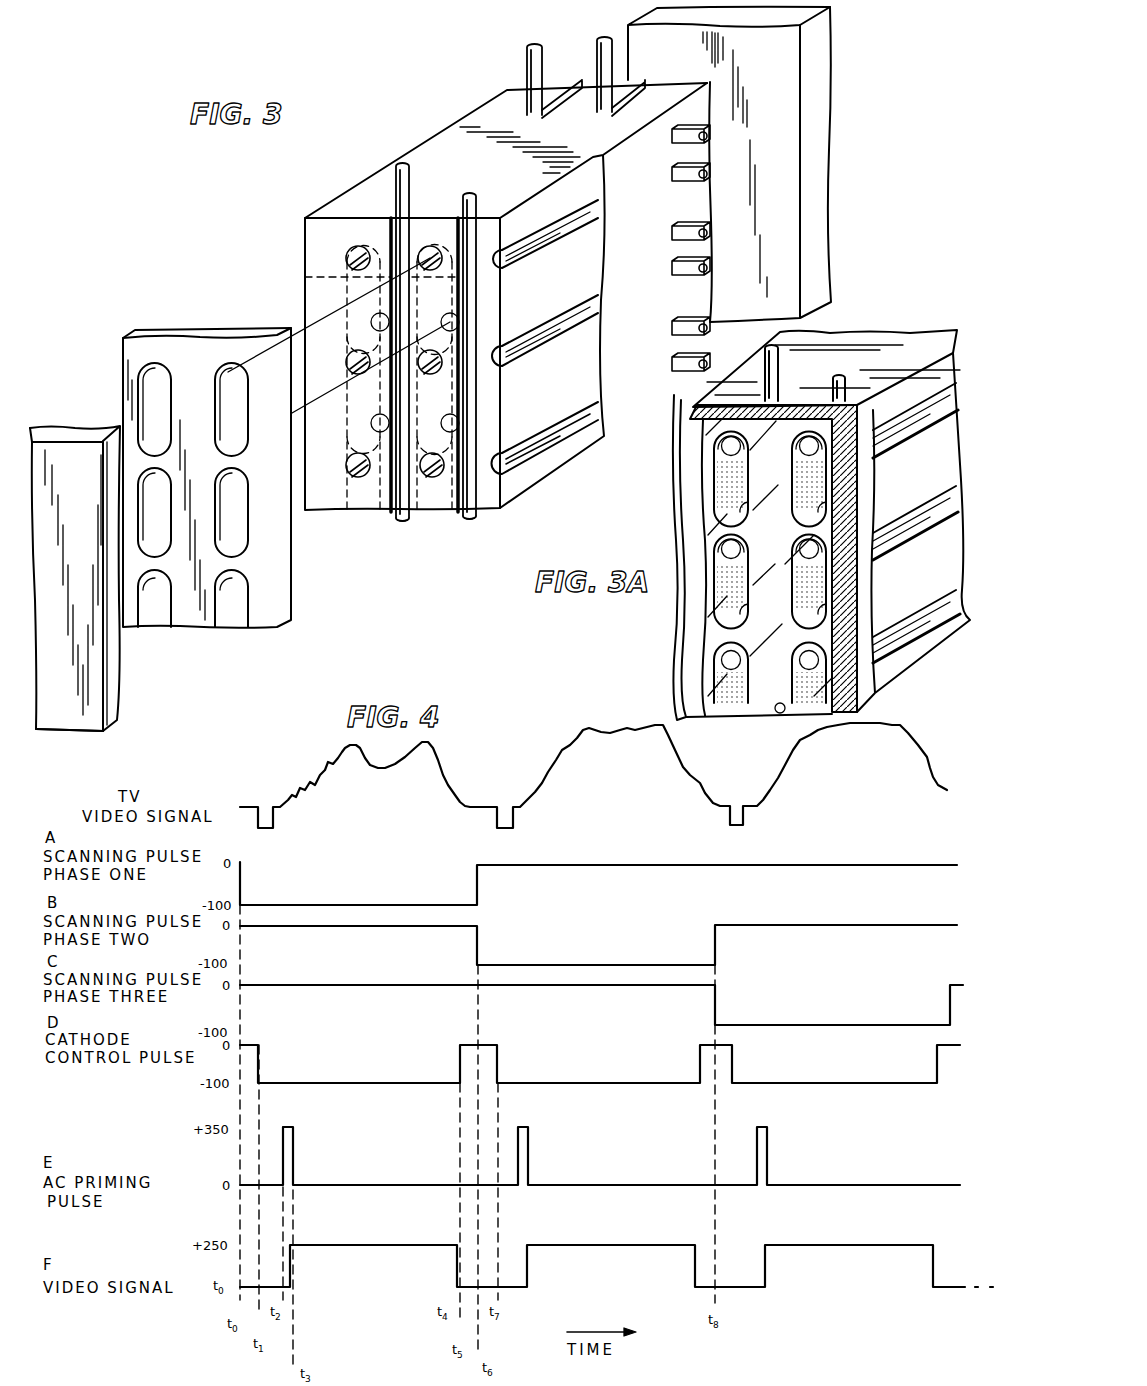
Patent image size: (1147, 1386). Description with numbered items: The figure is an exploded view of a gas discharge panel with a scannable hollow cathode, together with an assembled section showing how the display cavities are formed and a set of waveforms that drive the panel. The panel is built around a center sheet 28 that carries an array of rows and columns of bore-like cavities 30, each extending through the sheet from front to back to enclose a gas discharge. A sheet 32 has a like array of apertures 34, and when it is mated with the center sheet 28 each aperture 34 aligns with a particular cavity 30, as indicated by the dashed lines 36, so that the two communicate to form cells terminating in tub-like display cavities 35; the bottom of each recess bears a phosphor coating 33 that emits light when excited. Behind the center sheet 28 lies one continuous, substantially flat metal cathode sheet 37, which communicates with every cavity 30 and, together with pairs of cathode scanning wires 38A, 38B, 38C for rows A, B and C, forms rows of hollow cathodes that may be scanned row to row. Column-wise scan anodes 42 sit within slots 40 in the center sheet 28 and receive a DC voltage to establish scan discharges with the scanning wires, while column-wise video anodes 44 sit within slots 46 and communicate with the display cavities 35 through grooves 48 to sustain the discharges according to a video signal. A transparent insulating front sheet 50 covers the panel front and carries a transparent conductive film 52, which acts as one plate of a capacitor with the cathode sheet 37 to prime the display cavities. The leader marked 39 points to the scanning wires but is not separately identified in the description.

In FIG. 3, the base block top face 28 is at (350, 200).
In FIG. 3A, the base block top face 28 is at (885, 341).
In FIG. 3, the conductors 30 is at (533, 453).
In FIG. 3, the apertured plate 32 is at (215, 328).
In FIG. 3A, the apertured plate 32 is at (782, 403).
In FIG. 3A, the bottom notches 33 is at (807, 688).
In FIG. 3, the slot 34 is at (233, 552).
In FIG. 3A, the filled slots 35 is at (732, 578).
In FIG. 3, the hidden channels 36 is at (328, 303).
In FIG. 3, the spacer block 37 is at (820, 163).
In FIG. 3, the priming channel tubes A 38A is at (688, 137).
In FIG. 3, the priming channel tubes B 38B is at (700, 222).
In FIG. 3, the priming channel tubes C 38C is at (700, 318).
In FIG. 3, the tube leader 39 is at (703, 215).
In FIG. 3, the cathode block 40 is at (648, 84).
In FIG. 3, the pins 42 is at (603, 40).
In FIG. 3, the rods 44 is at (465, 197).
In FIG. 3, the rod ends 46 is at (470, 519).
In FIG. 3, the apertures 48 is at (375, 440).
In FIG. 3, the cover plate 50 is at (83, 426).
In FIG. 3A, the cover plate 50 is at (712, 397).
In FIG. 3, the plate edge 52 is at (89, 716).